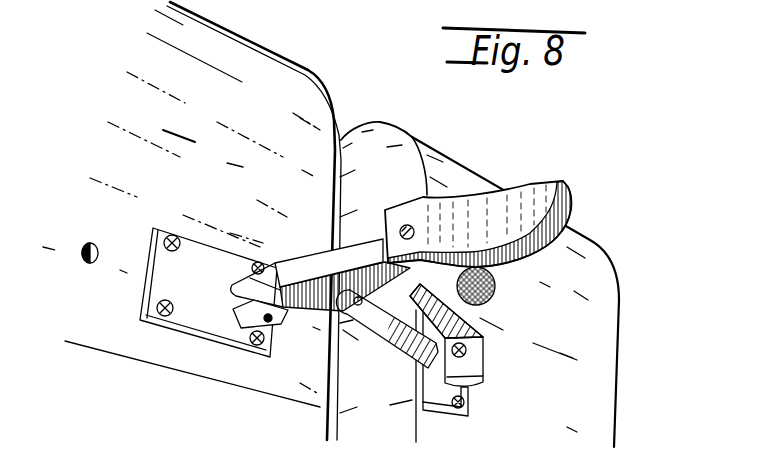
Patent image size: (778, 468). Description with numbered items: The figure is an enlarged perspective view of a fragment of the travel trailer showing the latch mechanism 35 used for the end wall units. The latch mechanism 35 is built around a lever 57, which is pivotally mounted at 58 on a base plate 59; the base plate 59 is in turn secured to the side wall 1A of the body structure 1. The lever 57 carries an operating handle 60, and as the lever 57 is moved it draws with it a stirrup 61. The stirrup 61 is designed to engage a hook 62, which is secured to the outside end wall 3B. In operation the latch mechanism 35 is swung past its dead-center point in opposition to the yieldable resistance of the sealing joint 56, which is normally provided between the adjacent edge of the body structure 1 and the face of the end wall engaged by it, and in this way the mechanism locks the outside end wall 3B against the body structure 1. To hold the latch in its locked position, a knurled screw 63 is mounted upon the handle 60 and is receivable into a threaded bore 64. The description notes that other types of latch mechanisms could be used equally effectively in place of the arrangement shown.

The body structure 1 is at (270, 53).
The side wall 1A is at (203, 149).
The outside end wall 3B is at (618, 325).
The latch mechanism 35 is at (449, 148).
The sealing joint 56 is at (330, 106).
The lever 57 is at (325, 265).
The pivotal mounting 58 is at (274, 328).
The base plate 59 is at (193, 308).
The operating handle 60 is at (483, 217).
The stirrup 61 is at (418, 300).
The hook 62 is at (472, 366).
The knurled screw 63 is at (490, 302).
The threaded bore 64 is at (83, 246).